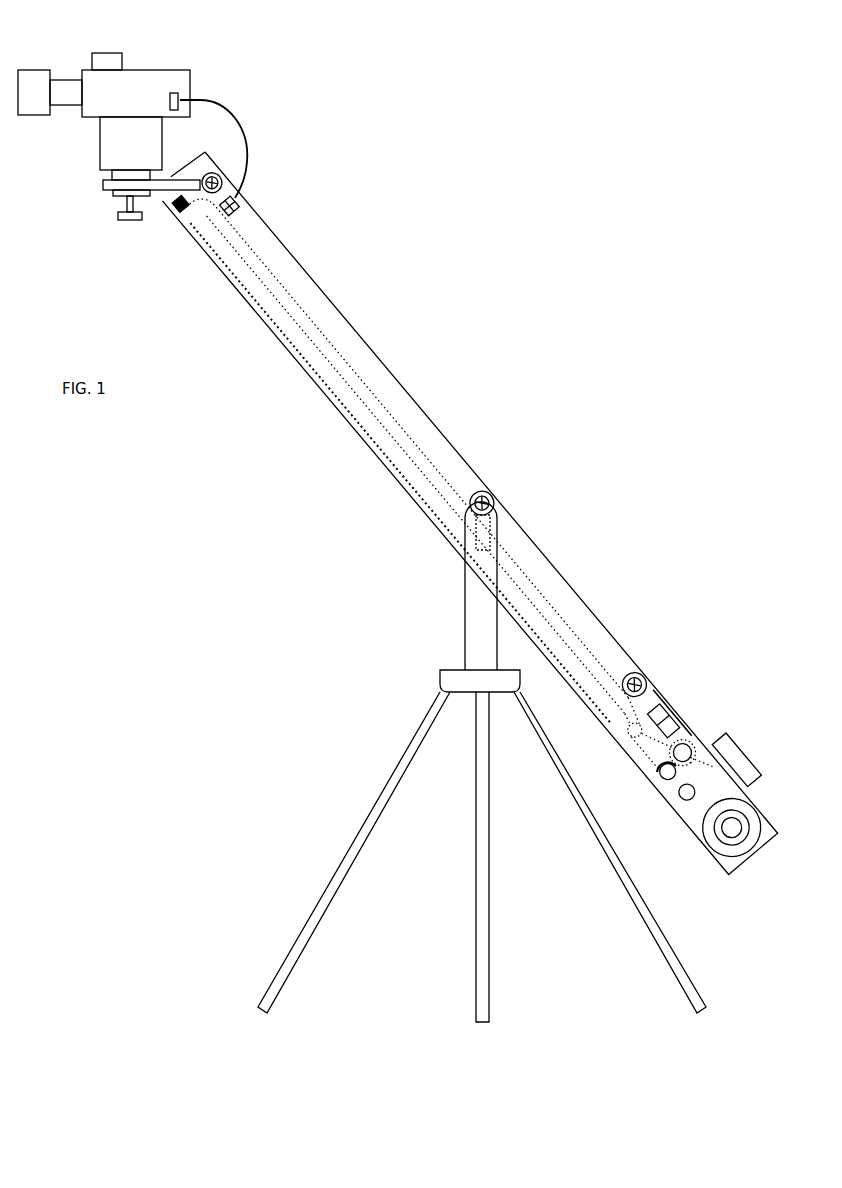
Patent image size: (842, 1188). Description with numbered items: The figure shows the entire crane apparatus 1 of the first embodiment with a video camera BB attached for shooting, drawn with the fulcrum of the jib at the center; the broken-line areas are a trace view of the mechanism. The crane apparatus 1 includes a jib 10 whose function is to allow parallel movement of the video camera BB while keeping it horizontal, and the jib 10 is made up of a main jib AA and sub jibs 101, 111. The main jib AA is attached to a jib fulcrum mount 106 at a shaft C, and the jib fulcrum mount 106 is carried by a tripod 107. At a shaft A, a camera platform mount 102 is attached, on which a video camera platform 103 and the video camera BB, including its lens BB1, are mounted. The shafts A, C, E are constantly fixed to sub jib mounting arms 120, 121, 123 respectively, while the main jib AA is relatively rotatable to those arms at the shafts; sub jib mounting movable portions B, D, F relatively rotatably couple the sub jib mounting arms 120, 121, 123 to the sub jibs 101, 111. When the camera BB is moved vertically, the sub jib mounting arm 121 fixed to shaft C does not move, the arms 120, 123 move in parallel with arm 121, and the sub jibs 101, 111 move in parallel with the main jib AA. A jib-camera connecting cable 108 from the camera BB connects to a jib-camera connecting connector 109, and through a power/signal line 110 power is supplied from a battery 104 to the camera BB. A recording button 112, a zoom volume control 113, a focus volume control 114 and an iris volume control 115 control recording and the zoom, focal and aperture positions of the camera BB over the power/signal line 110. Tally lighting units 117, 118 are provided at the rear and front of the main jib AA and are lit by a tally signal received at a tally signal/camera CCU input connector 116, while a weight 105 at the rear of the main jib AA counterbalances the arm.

The crane apparatus 1 is at (513, 183).
The jib 10 is at (445, 368).
The sub jib 101 is at (268, 280).
The camera platform mount 102 is at (105, 186).
The video camera platform 103 is at (105, 143).
The battery 104 is at (745, 760).
The weight 105 is at (745, 848).
The jib fulcrum mount 106 is at (468, 605).
The tripod 107 is at (387, 777).
The jib-camera connecting cable 108 is at (236, 128).
The jib-camera connecting connector 109 is at (242, 204).
The power/signal line 110 is at (272, 335).
The sub jib 111 is at (535, 603).
The recording button 112 is at (684, 742).
The zoom volume control 113 is at (663, 767).
The focus volume control 114 is at (667, 781).
The iris volume control 115 is at (687, 803).
The tally signal/camera CCU input connector 116 is at (665, 706).
The tally lighting unit 117 is at (668, 716).
The tally lighting unit 118 is at (173, 213).
The sub jib mounting arm 120 is at (190, 222).
The sub jib mounting arm 121 is at (490, 523).
The sub jib mounting arm 123 is at (628, 702).
The shaft A is at (206, 176).
The sub jib mounting movable portion B is at (218, 228).
The shaft C is at (477, 492).
The sub jib mounting movable portion D is at (497, 540).
The shaft E is at (641, 676).
The sub jib mounting movable portion F is at (622, 735).
The main jib AA is at (325, 296).
The video camera BB is at (145, 70).
The lens BB1 is at (38, 72).